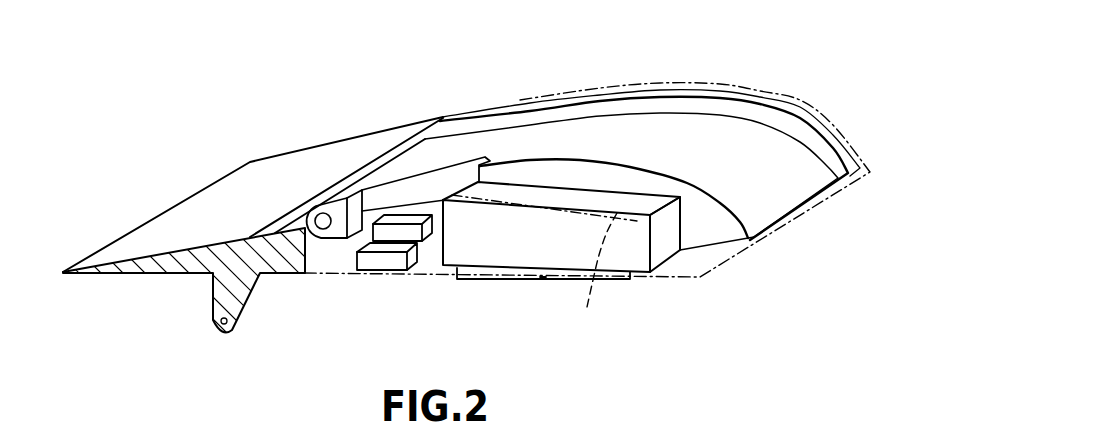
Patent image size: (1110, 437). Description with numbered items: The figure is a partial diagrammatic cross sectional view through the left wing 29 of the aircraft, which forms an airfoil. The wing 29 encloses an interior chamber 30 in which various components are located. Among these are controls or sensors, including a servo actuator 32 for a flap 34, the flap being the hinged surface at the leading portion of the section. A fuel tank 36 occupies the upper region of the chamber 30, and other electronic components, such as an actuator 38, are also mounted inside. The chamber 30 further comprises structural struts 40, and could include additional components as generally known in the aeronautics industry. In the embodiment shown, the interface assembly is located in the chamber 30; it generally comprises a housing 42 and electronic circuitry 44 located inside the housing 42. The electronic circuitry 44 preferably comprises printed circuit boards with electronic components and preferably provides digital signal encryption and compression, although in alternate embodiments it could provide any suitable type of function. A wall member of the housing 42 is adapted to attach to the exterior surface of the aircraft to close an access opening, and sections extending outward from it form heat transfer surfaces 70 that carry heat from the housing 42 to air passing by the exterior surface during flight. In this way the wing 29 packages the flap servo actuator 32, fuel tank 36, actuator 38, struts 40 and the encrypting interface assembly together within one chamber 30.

The left wing 29 is at (527, 93).
The interior chamber 30 is at (717, 230).
The servo actuator 32 is at (431, 243).
The flap 34 is at (305, 157).
The fuel tank 36 is at (707, 127).
The actuator 38 is at (383, 260).
The structural struts 40 is at (798, 118).
The housing 42 is at (662, 257).
The electronic circuitry 44 is at (588, 296).
The heat transfer surfaces 70 is at (490, 274).